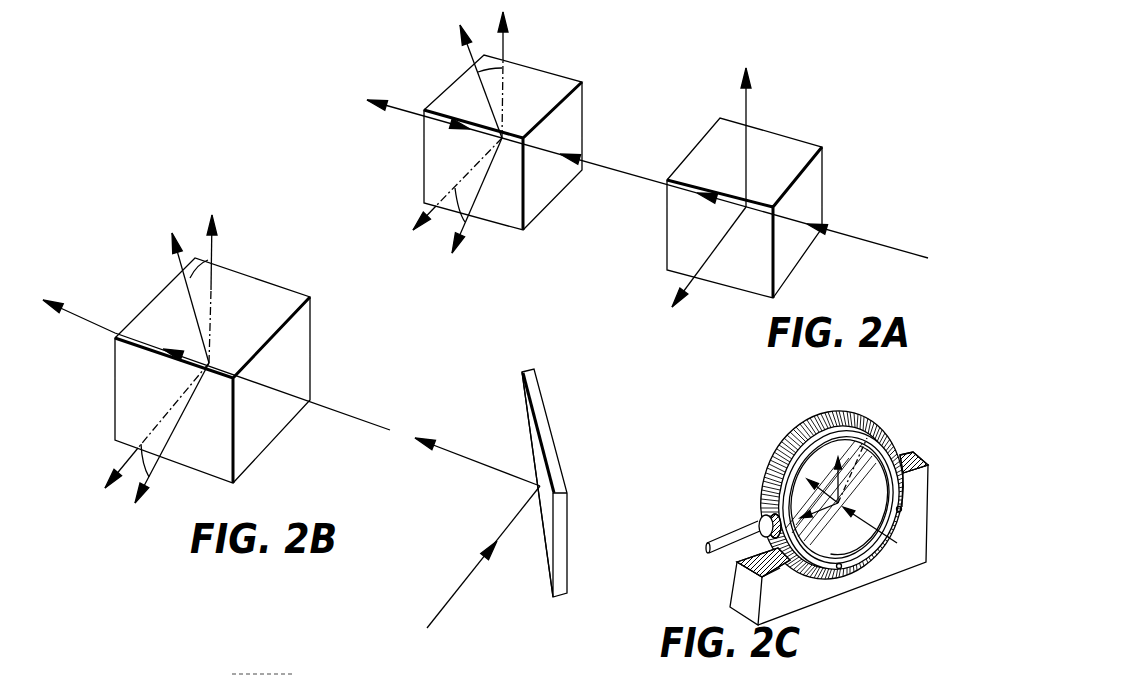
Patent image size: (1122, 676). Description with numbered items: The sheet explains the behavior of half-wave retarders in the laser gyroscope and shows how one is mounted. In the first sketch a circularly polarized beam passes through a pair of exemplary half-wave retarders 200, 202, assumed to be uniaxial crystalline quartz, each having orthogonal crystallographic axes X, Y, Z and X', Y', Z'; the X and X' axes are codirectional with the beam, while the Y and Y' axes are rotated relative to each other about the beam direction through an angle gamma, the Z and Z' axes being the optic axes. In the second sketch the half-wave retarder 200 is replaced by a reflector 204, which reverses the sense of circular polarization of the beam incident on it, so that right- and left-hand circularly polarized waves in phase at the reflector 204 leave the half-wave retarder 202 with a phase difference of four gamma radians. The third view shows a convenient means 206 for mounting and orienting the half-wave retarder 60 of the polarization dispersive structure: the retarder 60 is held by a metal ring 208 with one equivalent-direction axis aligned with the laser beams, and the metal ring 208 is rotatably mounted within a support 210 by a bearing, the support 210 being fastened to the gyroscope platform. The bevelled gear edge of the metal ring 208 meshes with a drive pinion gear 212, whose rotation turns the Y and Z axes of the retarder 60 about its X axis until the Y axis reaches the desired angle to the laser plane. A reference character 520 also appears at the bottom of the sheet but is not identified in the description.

In FIG. 2A, the half-wave retarder 200 is at (800, 138).
In FIG. 2A, the half-wave retarder 202 is at (583, 90).
In FIG. 2B, the half-wave retarder 202 is at (307, 357).
In FIG. 2B, the reflector 204 is at (552, 438).
In FIG. 2C, the means for mounting and orienting 206 is at (921, 446).
In FIG. 2C, the metal ring 208 is at (835, 412).
In FIG. 2C, the support 210 is at (901, 562).
In FIG. 2C, the drive pinion gear 212 is at (762, 515).
In FIG. 2C, the half-wave retarder 60 is at (828, 568).
In FIG. 2B, the element 520 is at (292, 672).